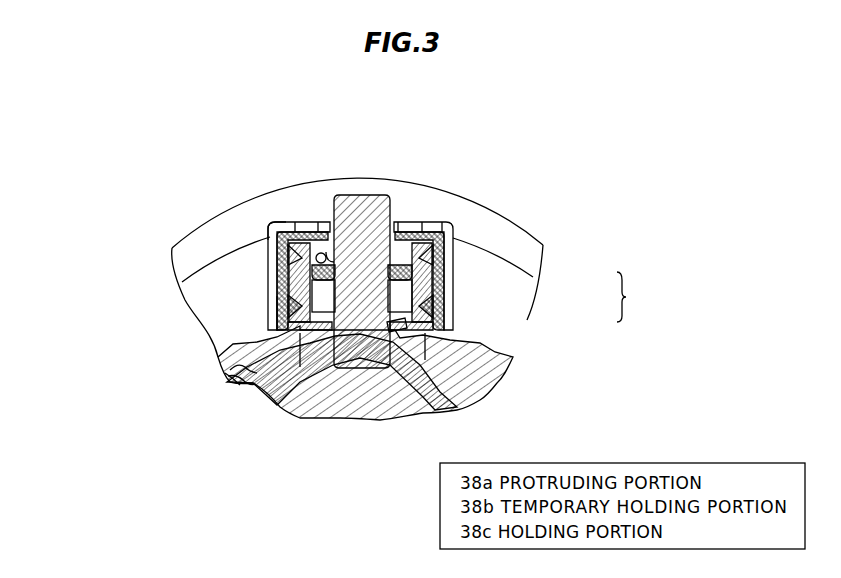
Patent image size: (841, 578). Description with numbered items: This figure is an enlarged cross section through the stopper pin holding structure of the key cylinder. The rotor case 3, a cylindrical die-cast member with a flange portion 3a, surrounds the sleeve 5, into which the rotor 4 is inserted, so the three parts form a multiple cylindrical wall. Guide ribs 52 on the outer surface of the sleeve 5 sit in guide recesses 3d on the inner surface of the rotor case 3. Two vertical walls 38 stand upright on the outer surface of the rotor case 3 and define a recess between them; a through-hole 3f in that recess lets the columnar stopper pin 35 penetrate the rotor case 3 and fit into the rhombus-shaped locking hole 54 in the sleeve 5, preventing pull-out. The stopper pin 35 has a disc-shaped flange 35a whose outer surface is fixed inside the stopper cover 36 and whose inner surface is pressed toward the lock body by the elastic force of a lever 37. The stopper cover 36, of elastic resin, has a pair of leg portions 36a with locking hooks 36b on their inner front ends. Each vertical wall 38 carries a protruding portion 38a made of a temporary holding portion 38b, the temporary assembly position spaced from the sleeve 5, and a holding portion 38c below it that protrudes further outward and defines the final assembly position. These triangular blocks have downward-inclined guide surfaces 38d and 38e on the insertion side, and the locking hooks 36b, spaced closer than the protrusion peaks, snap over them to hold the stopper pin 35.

The rotor case 3 is at (227, 263).
The flange portion 3a is at (493, 226).
The guide recesses 3d is at (223, 371).
The through-hole 3f is at (340, 320).
The rotor 4 is at (331, 409).
The sleeve 5 is at (268, 396).
The stopper pin 35 is at (366, 203).
The flange 35a is at (316, 255).
The stopper cover 36 is at (403, 222).
The leg portions 36a is at (308, 278).
The locking hooks 36b is at (294, 331).
The lever 37 is at (326, 252).
The vertical walls 38 is at (277, 272).
The protruding portion 38a is at (640, 297).
The temporary holding portion 38b is at (431, 262).
The holding portion 38c is at (425, 306).
The guide surface 38d is at (271, 226).
The guide surface 38e is at (280, 298).
The guide ribs 52 is at (240, 384).
The locking hole 54 is at (395, 366).